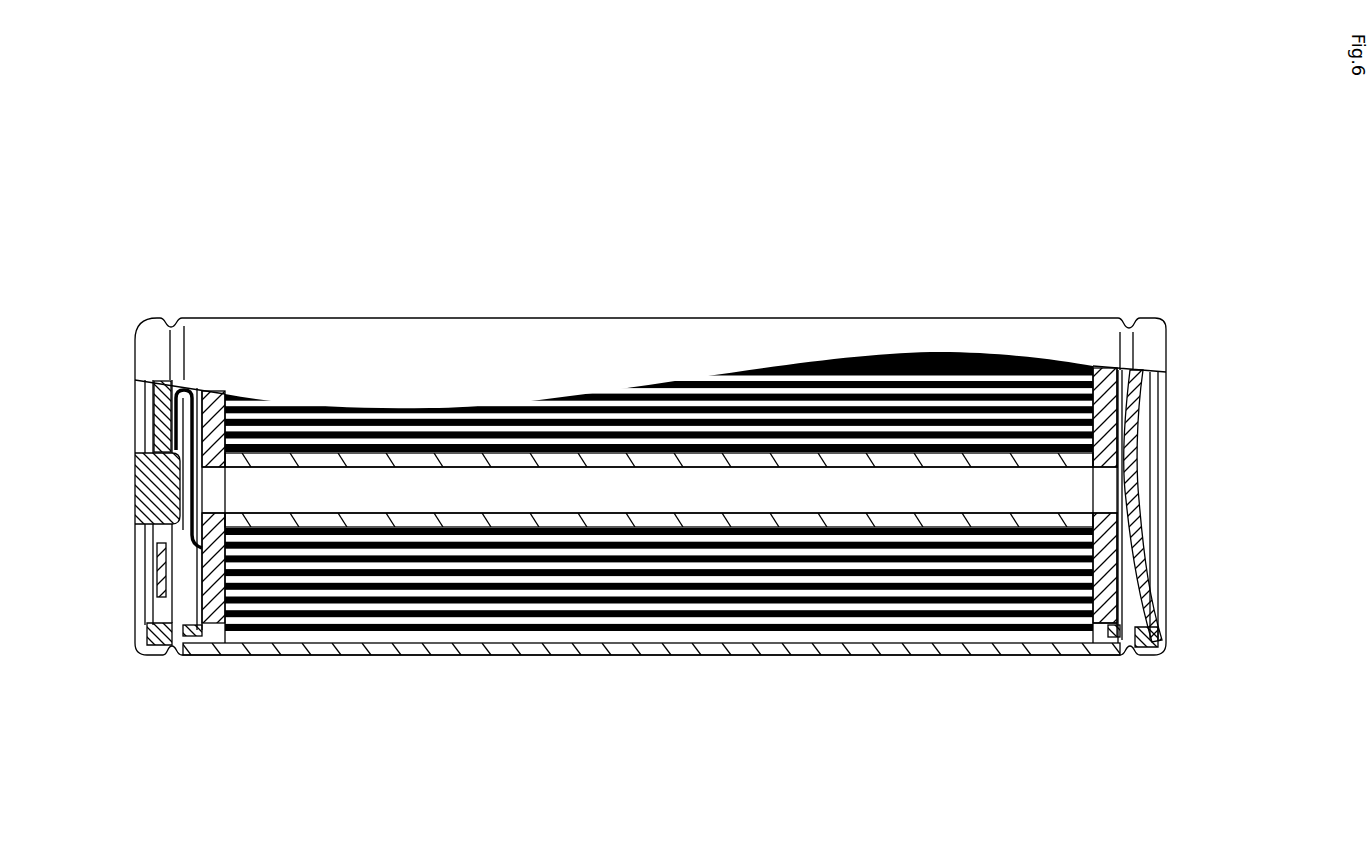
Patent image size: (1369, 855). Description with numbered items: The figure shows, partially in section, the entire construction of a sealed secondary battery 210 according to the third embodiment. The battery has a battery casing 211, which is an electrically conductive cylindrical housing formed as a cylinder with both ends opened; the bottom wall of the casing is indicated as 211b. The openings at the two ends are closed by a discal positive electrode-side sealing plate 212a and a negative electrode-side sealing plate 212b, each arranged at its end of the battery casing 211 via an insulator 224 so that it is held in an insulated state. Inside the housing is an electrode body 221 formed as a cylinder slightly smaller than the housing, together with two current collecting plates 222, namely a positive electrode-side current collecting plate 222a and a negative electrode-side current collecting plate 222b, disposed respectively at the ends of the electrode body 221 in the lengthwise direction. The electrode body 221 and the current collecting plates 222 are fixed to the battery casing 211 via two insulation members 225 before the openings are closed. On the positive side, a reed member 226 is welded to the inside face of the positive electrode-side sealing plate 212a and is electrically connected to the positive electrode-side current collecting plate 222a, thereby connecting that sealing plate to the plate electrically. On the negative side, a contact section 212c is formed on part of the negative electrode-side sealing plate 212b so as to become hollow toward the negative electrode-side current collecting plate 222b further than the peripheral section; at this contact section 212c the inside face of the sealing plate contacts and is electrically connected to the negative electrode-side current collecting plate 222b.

The sealed secondary battery 210 is at (1194, 225).
The battery casing 211 is at (1035, 330).
The bottom wall of case 211b is at (468, 650).
The positive electrode-side sealing plate 212a is at (135, 457).
The negative electrode-side sealing plate 212b is at (1133, 428).
The contact section 212c is at (1180, 412).
The electrode body 221 is at (768, 572).
The current collecting plates 222 is at (659, 566).
The positive electrode-side current collecting plate 222a is at (218, 637).
The negative electrode-side current collecting plate 222b is at (1102, 602).
The insulator 224 is at (141, 646).
The insulation members 225 is at (178, 640).
The reed member 226 is at (187, 390).